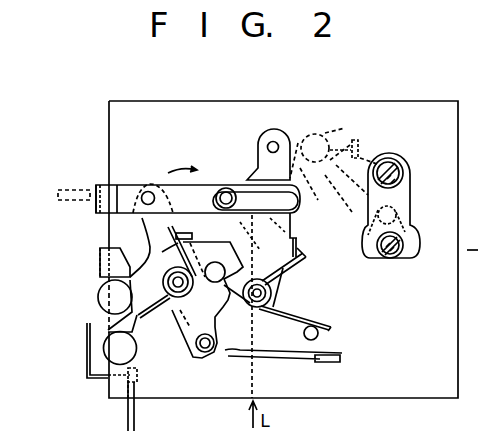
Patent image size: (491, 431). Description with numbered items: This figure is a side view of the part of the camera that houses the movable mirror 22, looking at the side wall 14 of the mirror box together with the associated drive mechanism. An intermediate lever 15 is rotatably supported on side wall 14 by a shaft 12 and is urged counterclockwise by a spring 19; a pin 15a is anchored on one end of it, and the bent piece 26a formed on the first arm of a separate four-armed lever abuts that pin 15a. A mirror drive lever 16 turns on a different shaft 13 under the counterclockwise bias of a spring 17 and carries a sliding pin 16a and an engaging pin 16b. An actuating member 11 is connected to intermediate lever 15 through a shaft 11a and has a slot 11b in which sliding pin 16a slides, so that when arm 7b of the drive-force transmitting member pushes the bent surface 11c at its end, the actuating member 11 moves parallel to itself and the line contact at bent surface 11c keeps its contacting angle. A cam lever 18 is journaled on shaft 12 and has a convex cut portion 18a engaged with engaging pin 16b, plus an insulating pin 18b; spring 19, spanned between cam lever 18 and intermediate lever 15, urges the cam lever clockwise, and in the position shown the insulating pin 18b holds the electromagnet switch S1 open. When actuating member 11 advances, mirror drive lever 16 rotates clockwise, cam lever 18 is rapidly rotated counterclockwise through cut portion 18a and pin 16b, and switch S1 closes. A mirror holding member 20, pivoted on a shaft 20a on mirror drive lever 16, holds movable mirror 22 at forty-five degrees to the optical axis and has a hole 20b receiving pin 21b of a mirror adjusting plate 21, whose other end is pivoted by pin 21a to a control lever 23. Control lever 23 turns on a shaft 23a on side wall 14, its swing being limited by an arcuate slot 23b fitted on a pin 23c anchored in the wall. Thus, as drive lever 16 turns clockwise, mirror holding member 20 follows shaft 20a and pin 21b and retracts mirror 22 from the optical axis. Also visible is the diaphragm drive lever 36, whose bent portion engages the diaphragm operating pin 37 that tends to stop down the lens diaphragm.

The arm 7b is at (62, 190).
The actuating member 11 is at (122, 188).
The shaft 11a is at (148, 184).
The slot 11b is at (245, 180).
The bent surface 11c is at (97, 187).
The shaft 12 is at (170, 317).
The shaft 13 is at (266, 294).
The side wall 14 is at (149, 107).
The intermediate lever 15 is at (142, 218).
The pin 15a is at (98, 298).
The mirror drive lever 16 is at (297, 245).
The sliding pin 16a is at (228, 188).
The engaging pin 16b is at (227, 291).
The spring 17 is at (331, 327).
The cam lever 18 is at (185, 340).
The convex cut portion 18a is at (193, 225).
The insulating pin 18b is at (204, 353).
The spring 19 is at (162, 252).
The mirror holding member 20 is at (298, 143).
The shaft 20a is at (271, 131).
The hole 20b is at (354, 139).
The mirror adjusting plate 21 is at (360, 137).
The pin 21a is at (411, 213).
The pin 21b is at (312, 136).
The movable mirror 22 is at (300, 226).
The control lever 23 is at (410, 188).
The shaft 23a is at (392, 163).
The arcuate slot 23b is at (412, 259).
The pin 23c is at (380, 259).
The bent piece 26a is at (99, 268).
The diaphragm drive lever 36 is at (87, 347).
The diaphragm operating pin 37 is at (127, 418).
The electromagnet switch S1 is at (331, 363).